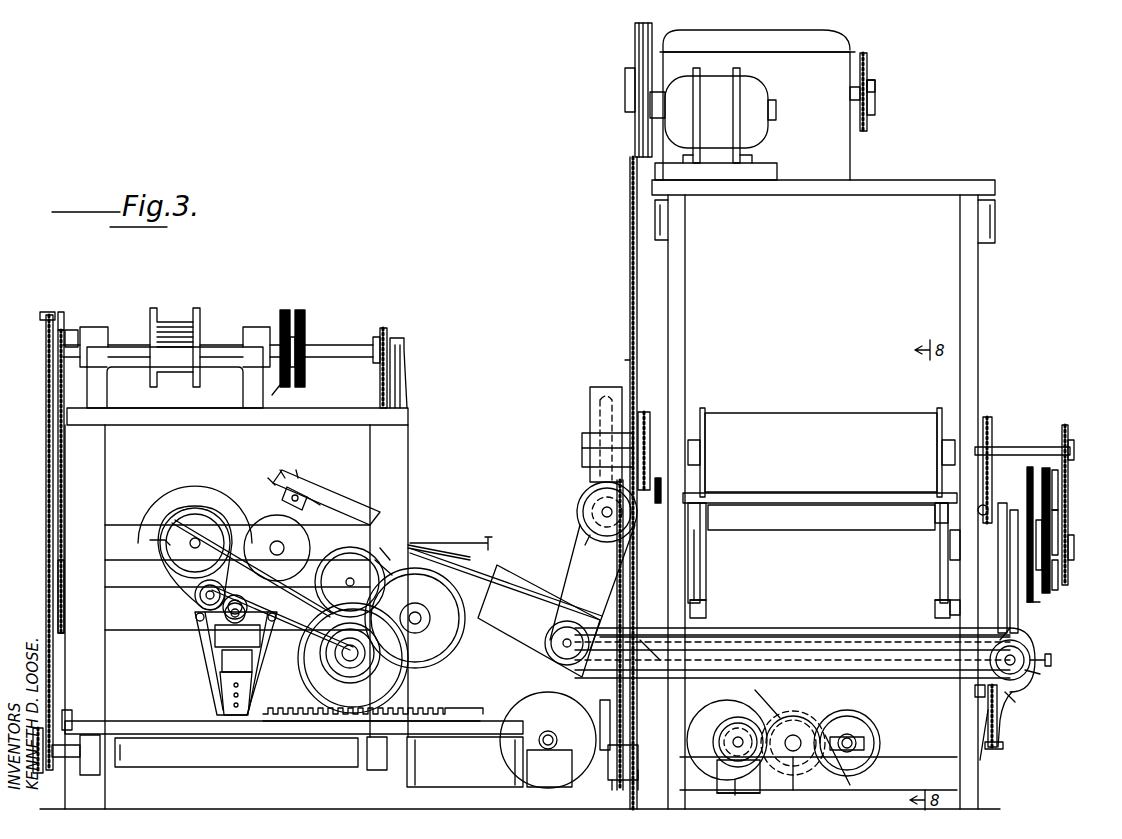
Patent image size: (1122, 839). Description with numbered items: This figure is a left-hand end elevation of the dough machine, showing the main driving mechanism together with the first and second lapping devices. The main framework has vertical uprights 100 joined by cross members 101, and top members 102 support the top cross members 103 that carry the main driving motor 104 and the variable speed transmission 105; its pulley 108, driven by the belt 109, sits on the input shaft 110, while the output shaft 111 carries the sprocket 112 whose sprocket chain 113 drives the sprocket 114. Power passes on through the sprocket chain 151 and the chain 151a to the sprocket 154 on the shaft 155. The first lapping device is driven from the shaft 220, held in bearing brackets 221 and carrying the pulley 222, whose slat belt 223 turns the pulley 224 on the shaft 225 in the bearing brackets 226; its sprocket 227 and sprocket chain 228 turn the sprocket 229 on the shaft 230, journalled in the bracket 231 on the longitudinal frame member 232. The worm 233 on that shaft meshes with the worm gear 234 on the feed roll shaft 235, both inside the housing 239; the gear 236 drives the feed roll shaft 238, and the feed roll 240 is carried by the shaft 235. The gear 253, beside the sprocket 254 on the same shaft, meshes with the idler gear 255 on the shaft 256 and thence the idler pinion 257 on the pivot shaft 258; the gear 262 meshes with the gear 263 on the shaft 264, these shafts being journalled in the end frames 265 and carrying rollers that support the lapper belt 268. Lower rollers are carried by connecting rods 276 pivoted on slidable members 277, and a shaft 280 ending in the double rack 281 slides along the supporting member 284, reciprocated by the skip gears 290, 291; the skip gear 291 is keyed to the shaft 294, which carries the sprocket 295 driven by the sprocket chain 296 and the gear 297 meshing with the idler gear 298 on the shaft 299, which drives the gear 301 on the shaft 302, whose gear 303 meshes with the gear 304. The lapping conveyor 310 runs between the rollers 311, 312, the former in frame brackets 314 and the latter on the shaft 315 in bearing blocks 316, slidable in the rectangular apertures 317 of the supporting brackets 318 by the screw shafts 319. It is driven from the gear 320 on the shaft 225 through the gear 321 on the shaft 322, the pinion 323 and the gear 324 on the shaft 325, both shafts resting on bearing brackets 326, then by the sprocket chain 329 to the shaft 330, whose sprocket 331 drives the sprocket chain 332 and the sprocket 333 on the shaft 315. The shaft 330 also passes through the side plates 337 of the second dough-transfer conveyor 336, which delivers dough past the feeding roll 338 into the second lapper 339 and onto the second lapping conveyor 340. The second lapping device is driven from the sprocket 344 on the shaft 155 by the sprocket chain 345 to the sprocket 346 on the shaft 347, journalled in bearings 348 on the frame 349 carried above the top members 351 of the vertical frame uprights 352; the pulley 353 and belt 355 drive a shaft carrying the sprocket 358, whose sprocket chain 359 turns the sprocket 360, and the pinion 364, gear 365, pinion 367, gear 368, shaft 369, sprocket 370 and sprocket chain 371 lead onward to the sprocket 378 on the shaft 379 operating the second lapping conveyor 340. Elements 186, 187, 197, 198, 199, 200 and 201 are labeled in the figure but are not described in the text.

The vertical uprights 100 is at (685, 302).
The cross members 101 is at (950, 778).
The top members 102 is at (995, 236).
The top cross members 103 is at (990, 186).
The main driving motor 104 is at (758, 135).
The variable speed transmission 105 is at (808, 98).
The pulley 108 is at (625, 100).
The belt 109 is at (635, 133).
The shaft 110 is at (660, 92).
The output shaft 111 is at (850, 92).
The sprocket 112 is at (875, 95).
The sprocket chain 113 is at (867, 125).
The sprocket 114 is at (875, 80).
The sprocket chain 151 is at (630, 232).
The chain 151a is at (628, 360).
The sprocket 154 is at (614, 775).
The shaft 155 is at (640, 772).
The rod 186 is at (988, 738).
The bracket 187 is at (1003, 742).
The pivot block 197 is at (300, 490).
The link 198 is at (296, 478).
The arm 199 is at (312, 492).
The link 200 is at (285, 475).
The pin 201 is at (272, 482).
The shaft 220 is at (548, 732).
The bearing brackets 221 is at (556, 762).
The pulley 222 is at (510, 712).
The belt 223 is at (640, 712).
The pulley 224 is at (710, 712).
The shaft 225 is at (712, 755).
The bearing brackets 226 is at (745, 787).
The sprocket 227 is at (738, 722).
The sprocket chain 228 is at (595, 580).
The sprocket 229 is at (585, 545).
The shaft 230 is at (600, 512).
The bracket 231 is at (623, 555).
The longitudinal frame member 232 is at (662, 490).
The worm 233 is at (580, 502).
The worm gear 234 is at (596, 425).
The feed roll shaft 235 is at (582, 440).
The gear 236 is at (650, 415).
The feed roll shaft 238 is at (285, 546).
The housing 239 is at (590, 392).
The feed roll 240 is at (815, 422).
The gear 253 is at (988, 422).
The sprocket 254 is at (1070, 442).
The idler gear 255 is at (988, 510).
The shaft 256 is at (236, 596).
The idler pinion 257 is at (980, 508).
The pivot shaft 258 is at (935, 516).
The gear 262 is at (270, 610).
The gear 263 is at (700, 510).
The shaft 264 is at (706, 530).
The end frames 265 is at (706, 550).
The lapper belt 268 is at (832, 528).
The connecting rods 276 is at (706, 572).
The slidable members 277 is at (706, 590).
The shaft 280 is at (950, 613).
The double rack 281 is at (1020, 640).
The supporting member 284 is at (203, 735).
The skip gear 290 is at (1012, 620).
The skip gear 291 is at (1000, 600).
The shaft 294 is at (950, 540).
The sprocket 295 is at (1074, 560).
The sprocket chain 296 is at (1065, 428).
The gear 297 is at (1058, 585).
The idler gear 298 is at (1048, 540).
The shaft 299 is at (1058, 520).
The gear 301 is at (1058, 472).
The shaft 302 is at (1050, 490).
The gear 303 is at (1030, 467).
The gear 304 is at (1033, 600).
The lapping conveyor 310 is at (850, 660).
The roller 311 is at (630, 640).
The roller 312 is at (1032, 652).
The frame brackets 314 is at (650, 640).
The shaft 315 is at (1051, 660).
The bearing blocks 316 is at (1020, 684).
The rectangular apertures 317 is at (1000, 700).
The supporting brackets 318 is at (975, 686).
The screw shafts 319 is at (1045, 668).
The gear 320 is at (722, 793).
The gear 321 is at (785, 715).
The shaft 322 is at (795, 765).
The pinion 323 is at (805, 715).
The gear 324 is at (880, 735).
The shaft 325 is at (852, 735).
The bearing brackets 326 is at (835, 770).
The sprocket chain 329 is at (772, 690).
The shaft 330 is at (560, 648).
The sprocket 331 is at (560, 622).
The sprocket chain 332 is at (775, 628).
The sprocket 333 is at (1003, 725).
The second dough-transfer conveyor 336 is at (345, 515).
The side plates 337 is at (545, 610).
The feeding roll 338 is at (195, 486).
The second lapper 339 is at (190, 661).
The second lapping conveyor 340 is at (160, 767).
The sprocket 344 is at (68, 712).
The sprocket chain 345 is at (46, 412).
The sprocket 346 is at (40, 318).
The shaft 347 is at (70, 330).
The bearings 348 is at (95, 327).
The frame 349 is at (108, 398).
The top members 351 is at (260, 425).
The vertical frame uprights 352 is at (108, 452).
The pulley 353 is at (198, 312).
The belt 355 is at (177, 310).
The sprocket 358 is at (58, 315).
The sprocket chain 359 is at (58, 470).
The sprocket 360 is at (64, 600).
The pinion 364 is at (285, 387).
The gear 365 is at (285, 310).
The pinion 367 is at (330, 345).
The gear 368 is at (305, 320).
The shaft 369 is at (375, 337).
The sprocket 370 is at (387, 332).
The sprocket chain 371 is at (380, 388).
The sprocket 378 is at (40, 780).
The shaft 379 is at (60, 757).